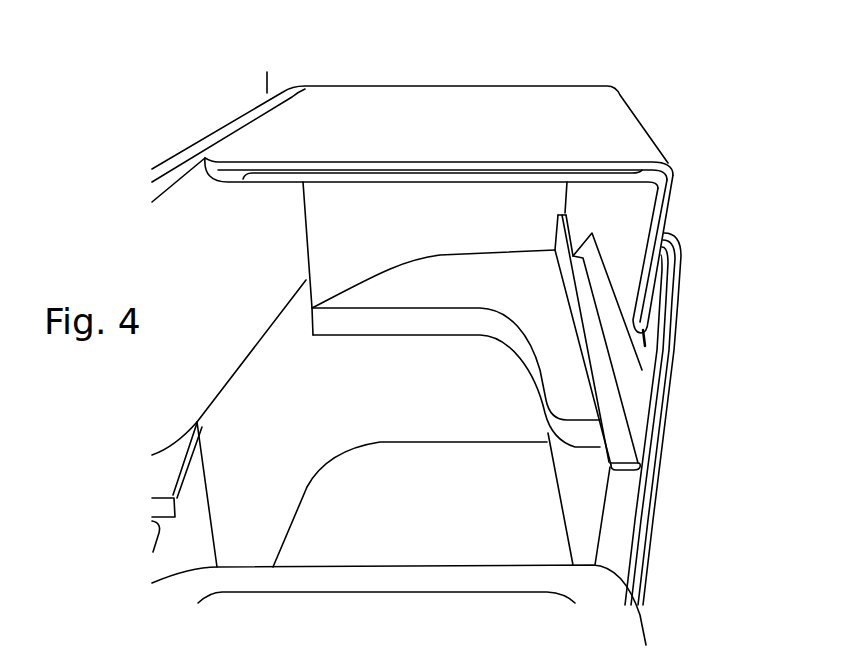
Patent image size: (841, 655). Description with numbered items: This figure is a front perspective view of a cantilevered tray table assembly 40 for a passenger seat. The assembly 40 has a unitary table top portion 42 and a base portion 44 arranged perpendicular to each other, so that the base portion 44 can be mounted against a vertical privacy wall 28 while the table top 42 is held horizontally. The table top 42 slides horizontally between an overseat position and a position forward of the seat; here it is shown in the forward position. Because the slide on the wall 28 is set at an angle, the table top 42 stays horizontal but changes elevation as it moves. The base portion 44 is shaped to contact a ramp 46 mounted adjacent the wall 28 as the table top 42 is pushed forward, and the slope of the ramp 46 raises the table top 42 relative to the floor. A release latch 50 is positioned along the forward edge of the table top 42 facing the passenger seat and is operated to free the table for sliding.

The cantilevered tray table assembly 40 is at (463, 242).
The table top portion 42 is at (620, 125).
The base portion 44 is at (638, 227).
The ramp 46 is at (627, 450).
The release latch 50 is at (508, 173).
The privacy wall 28 is at (678, 250).